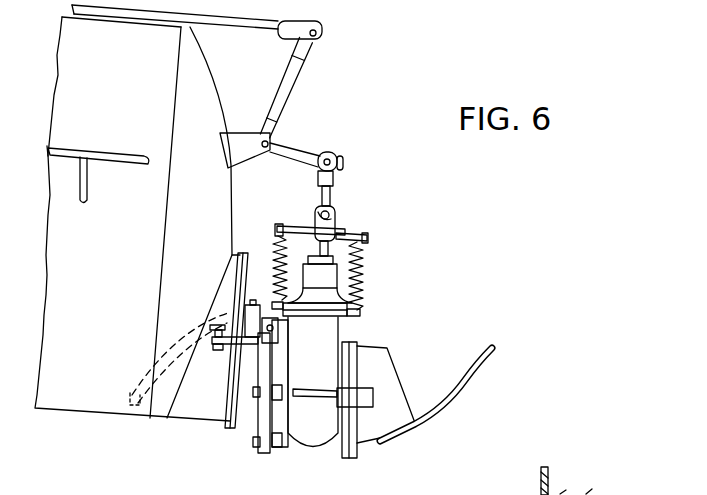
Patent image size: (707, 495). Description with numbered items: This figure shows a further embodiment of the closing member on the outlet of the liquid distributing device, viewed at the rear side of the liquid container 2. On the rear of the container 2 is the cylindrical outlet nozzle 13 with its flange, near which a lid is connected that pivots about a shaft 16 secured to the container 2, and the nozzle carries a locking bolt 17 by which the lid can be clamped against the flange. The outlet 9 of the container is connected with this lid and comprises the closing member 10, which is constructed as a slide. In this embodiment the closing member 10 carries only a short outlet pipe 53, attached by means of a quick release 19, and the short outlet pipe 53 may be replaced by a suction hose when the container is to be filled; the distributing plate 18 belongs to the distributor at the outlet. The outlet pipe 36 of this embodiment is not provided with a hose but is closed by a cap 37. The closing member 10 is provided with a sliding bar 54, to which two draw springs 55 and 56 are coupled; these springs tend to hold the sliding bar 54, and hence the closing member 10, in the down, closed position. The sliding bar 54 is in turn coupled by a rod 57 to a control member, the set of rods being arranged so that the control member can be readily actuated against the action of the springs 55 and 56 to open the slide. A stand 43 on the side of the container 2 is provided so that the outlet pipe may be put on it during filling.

The liquid container 2 is at (66, 408).
The outlet 9 is at (243, 426).
The closing member 10 is at (310, 446).
The cylindrical outlet nozzle 13 is at (177, 418).
The shaft 16 is at (252, 303).
The locking bolt 17 is at (213, 343).
The distributing plate 18 is at (436, 425).
The quick release 19 is at (364, 405).
The outlet pipe 36 is at (136, 383).
The cap 37 is at (279, 329).
The stand 43 is at (115, 152).
The short outlet pipe 53 is at (392, 368).
The sliding bar 54 is at (337, 238).
The draw spring 55 is at (278, 249).
The draw spring 56 is at (362, 268).
The rod 57 is at (271, 33).